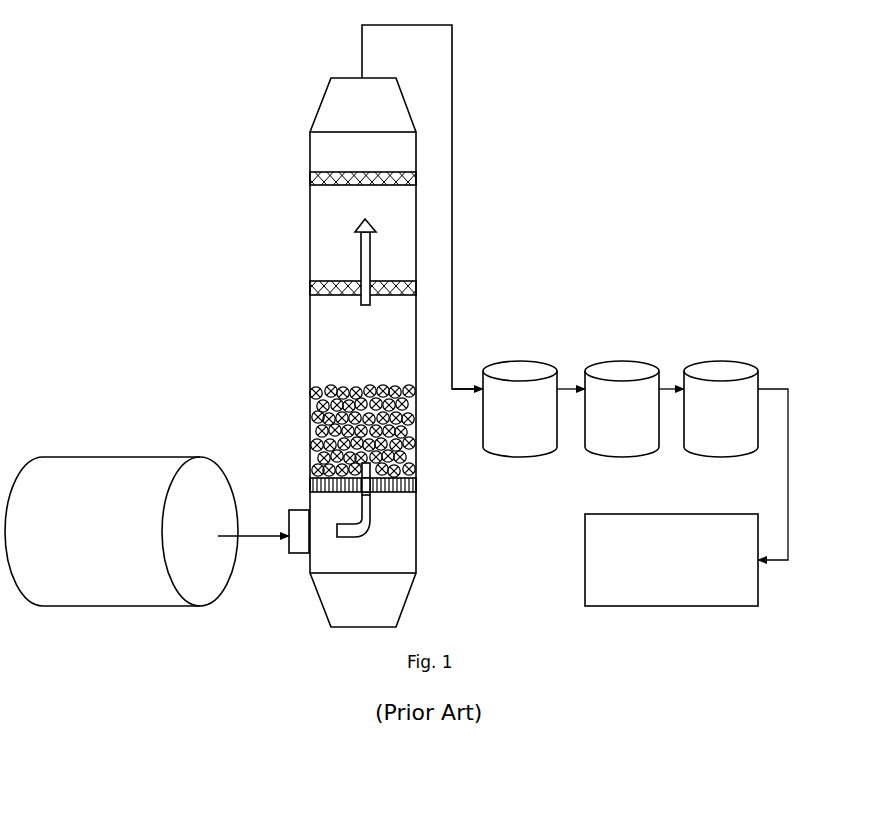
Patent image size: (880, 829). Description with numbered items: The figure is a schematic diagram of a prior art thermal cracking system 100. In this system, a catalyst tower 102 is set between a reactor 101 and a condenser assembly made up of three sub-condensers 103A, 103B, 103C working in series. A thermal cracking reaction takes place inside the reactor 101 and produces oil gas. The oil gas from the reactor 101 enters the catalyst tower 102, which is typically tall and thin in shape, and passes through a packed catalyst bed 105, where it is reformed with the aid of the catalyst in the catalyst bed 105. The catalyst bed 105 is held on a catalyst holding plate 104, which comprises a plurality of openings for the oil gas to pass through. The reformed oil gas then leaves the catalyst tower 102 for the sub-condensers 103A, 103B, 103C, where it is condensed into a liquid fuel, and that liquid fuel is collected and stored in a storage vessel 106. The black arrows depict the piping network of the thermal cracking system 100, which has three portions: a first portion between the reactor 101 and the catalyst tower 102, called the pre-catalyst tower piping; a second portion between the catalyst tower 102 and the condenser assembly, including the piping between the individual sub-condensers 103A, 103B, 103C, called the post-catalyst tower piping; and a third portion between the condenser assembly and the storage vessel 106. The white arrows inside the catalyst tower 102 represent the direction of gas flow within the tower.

The thermal cracking system 100 is at (159, 178).
The reactor 101 is at (106, 540).
The catalyst tower 102 is at (310, 244).
The sub-condenser 103A is at (540, 429).
The sub-condenser 103B is at (642, 429).
The sub-condenser 103C is at (741, 429).
The catalyst holding plate 104 is at (310, 486).
The catalyst bed 105 is at (342, 388).
The storage vessel 106 is at (684, 568).